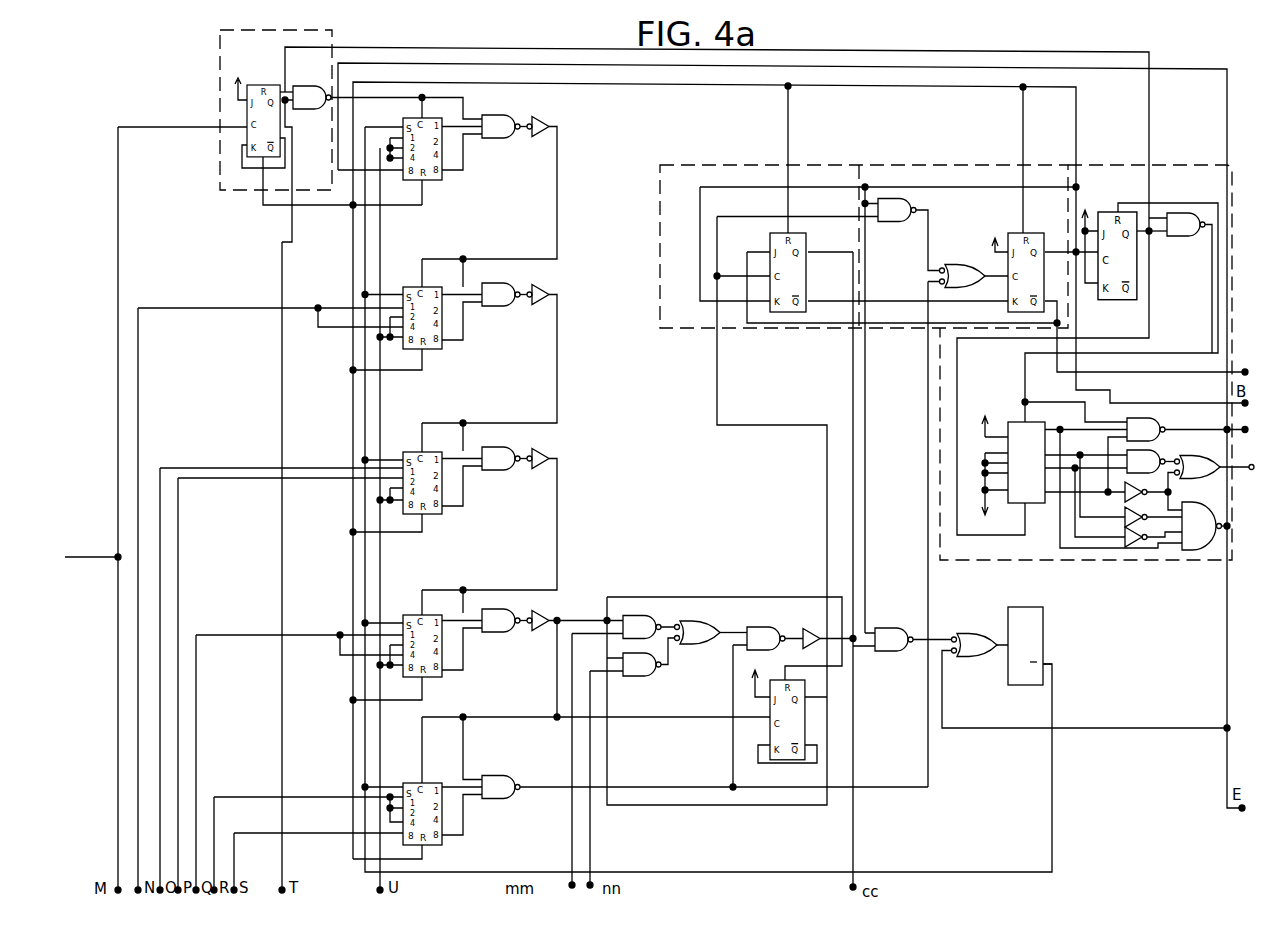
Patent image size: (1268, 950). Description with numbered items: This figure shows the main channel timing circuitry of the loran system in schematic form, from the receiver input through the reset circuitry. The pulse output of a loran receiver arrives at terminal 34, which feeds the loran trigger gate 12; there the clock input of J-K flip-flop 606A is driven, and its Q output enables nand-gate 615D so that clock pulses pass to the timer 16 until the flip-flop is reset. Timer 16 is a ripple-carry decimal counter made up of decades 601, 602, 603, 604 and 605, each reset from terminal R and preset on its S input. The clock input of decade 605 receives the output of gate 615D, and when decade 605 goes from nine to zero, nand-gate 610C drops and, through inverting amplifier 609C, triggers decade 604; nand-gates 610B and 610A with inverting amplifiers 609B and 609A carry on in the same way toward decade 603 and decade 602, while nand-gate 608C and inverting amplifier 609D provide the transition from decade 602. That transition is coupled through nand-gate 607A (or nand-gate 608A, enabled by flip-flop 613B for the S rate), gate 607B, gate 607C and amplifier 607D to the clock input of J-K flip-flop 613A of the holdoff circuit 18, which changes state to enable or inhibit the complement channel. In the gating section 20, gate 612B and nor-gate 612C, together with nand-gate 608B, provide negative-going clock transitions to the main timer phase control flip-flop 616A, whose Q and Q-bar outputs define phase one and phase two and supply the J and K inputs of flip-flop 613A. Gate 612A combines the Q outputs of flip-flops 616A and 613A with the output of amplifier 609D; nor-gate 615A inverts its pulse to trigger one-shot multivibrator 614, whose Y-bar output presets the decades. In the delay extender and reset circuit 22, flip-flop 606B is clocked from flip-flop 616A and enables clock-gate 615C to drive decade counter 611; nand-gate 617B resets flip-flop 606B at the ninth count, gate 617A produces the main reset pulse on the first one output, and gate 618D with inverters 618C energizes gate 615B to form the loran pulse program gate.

The loran trigger gate 12 is at (332, 32).
The timer 16 is at (669, 564).
The holdoff circuit 18 is at (689, 196).
The gating section 20 is at (900, 184).
The delay extender and reset circuit 22 is at (1130, 167).
The terminal 34 is at (65, 558).
The decade 601 is at (410, 783).
The decade 602 is at (410, 614).
The decade 603 is at (410, 451).
The decade 604 is at (410, 286).
The decade 605 is at (406, 119).
The J-K flip-flop 606A is at (258, 84).
The flip-flop 606B is at (1108, 212).
The nand-gate 607A is at (647, 617).
The gate 607B is at (710, 645).
The gate 607C is at (772, 627).
The amplifier 607D is at (802, 644).
The nand-gate 608A is at (626, 679).
The nand-gate 608B is at (494, 777).
The nand-gate 608C is at (498, 633).
The inverting amplifier 609A is at (540, 444).
The inverting amplifier 609B is at (542, 286).
The inverting amplifier 609C is at (541, 114).
The inverting amplifier 609D is at (541, 616).
The nand-gate 610A is at (482, 471).
The nand-gate 610B is at (484, 284).
The nand-gate 610C is at (492, 112).
The decade counter 611 is at (1010, 421).
The gate 612A is at (906, 622).
The gate 612B is at (916, 213).
The nor-gate 612C is at (966, 268).
The J-K flip-flop 613A is at (770, 246).
The flip-flop 613B is at (758, 760).
The one-shot multivibrator 614 is at (1043, 613).
The nor-gate 615A is at (966, 631).
The gate 615B is at (1210, 480).
The clock-gate 615C is at (1182, 240).
The nand-gate 615D is at (312, 87).
The main timer phase control flip-flop 616A is at (1012, 236).
The gate 617A is at (1192, 552).
The nand-gate 617B is at (1147, 421).
The inverters 618C is at (1126, 499).
The gate 618D is at (1155, 453).